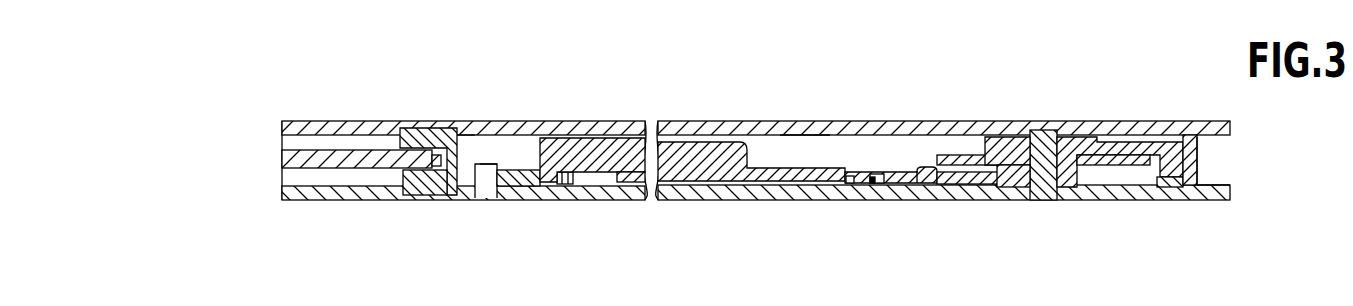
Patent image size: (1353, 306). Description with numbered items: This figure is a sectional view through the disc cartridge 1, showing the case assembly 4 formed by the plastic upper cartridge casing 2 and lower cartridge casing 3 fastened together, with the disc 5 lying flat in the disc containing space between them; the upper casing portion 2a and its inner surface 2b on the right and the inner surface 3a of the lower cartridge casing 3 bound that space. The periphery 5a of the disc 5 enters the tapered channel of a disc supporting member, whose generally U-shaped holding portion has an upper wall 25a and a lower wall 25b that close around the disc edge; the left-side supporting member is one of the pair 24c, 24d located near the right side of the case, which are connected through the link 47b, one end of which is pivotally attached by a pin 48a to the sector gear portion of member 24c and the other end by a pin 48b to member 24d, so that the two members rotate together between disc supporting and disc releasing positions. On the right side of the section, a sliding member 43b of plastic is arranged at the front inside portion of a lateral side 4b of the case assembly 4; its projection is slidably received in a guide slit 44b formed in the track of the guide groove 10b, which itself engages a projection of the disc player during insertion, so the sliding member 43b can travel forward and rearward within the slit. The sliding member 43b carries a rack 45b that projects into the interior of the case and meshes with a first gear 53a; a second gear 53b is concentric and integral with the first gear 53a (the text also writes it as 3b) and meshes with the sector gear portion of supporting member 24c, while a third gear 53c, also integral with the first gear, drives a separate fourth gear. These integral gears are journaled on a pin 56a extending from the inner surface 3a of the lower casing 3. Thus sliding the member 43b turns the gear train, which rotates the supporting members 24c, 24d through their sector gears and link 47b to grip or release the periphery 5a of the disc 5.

The disc cartridge 1 is at (320, 214).
The upper cartridge casing 2 is at (315, 121).
The upper casing portion 2a is at (722, 130).
The upper casing inner surface 2b is at (790, 140).
The lower cartridge casing 3 is at (348, 198).
The inner surface of the lower cartridge casing 3a is at (690, 200).
The second gear 3b is at (760, 177).
The case assembly 4 is at (855, 115).
The lateral sides of the case assembly 4b is at (1236, 164).
The disc 5 is at (283, 160).
The periphery of the disc 5a is at (437, 180).
The guide groove 10b is at (1215, 182).
The disc supporting member 24c is at (960, 182).
The disc supporting member 24d is at (470, 130).
The upper wall of the holding portion 25a is at (410, 142).
The lower wall of the holding portion 25b is at (408, 192).
The sliding member 43b is at (1174, 140).
The guide slit 44b is at (1180, 172).
The rack 45b is at (1110, 140).
The link 47b is at (633, 162).
The pin 48a is at (871, 183).
The pin 48b is at (542, 183).
The first gear 53a is at (1097, 142).
The second gear 53b is at (1012, 176).
The third gear 53c is at (1115, 175).
The pin 56a is at (1040, 134).